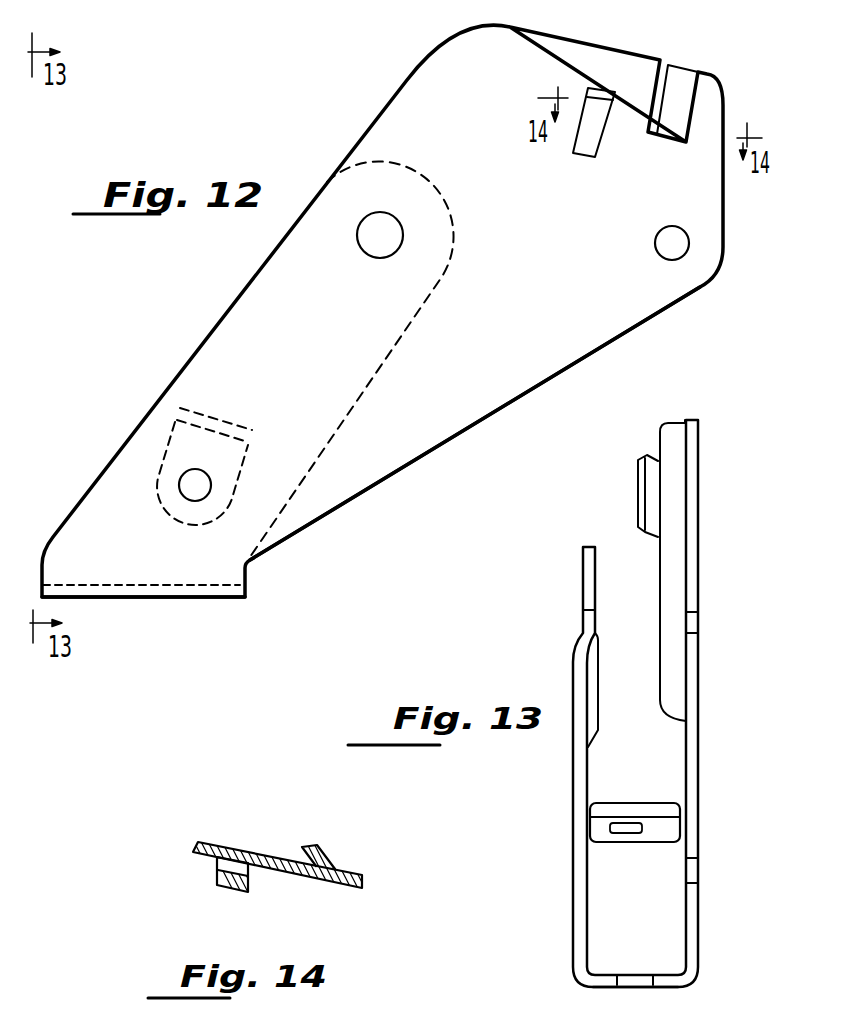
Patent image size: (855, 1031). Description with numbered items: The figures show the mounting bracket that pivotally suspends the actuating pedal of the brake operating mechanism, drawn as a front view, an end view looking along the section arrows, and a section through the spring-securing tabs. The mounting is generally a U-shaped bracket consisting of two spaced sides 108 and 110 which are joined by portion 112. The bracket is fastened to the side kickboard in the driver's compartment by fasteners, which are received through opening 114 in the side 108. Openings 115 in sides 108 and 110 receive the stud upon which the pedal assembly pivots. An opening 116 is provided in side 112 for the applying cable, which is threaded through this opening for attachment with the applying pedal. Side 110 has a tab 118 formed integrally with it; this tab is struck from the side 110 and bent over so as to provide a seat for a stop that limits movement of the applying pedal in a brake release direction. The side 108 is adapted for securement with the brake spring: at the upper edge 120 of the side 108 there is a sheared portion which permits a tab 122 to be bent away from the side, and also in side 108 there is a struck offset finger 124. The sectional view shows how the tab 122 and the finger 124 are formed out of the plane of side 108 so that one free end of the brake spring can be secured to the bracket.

In FIG. 12, the side 108 is at (483, 402).
In FIG. 13, the side 108 is at (693, 733).
In FIG. 14, the side 108 is at (286, 865).
In FIG. 12, the side 110 is at (335, 433).
In FIG. 13, the side 110 is at (578, 772).
In FIG. 12, the portion 112 is at (220, 598).
In FIG. 13, the portion 112 is at (675, 978).
In FIG. 12, the opening 114 is at (677, 242).
In FIG. 12, the openings 115 is at (372, 227).
In FIG. 13, the openings 115 is at (693, 633).
In FIG. 13, the opening 116 is at (630, 977).
In FIG. 13, the tab 118 is at (672, 830).
In FIG. 12, the upper edge 120 is at (647, 55).
In FIG. 12, the tab 122 is at (683, 85).
In FIG. 13, the tab 122 is at (648, 496).
In FIG. 14, the tab 122 is at (313, 845).
In FIG. 12, the struck offset finger 124 is at (598, 140).
In FIG. 14, the struck offset finger 124 is at (230, 882).